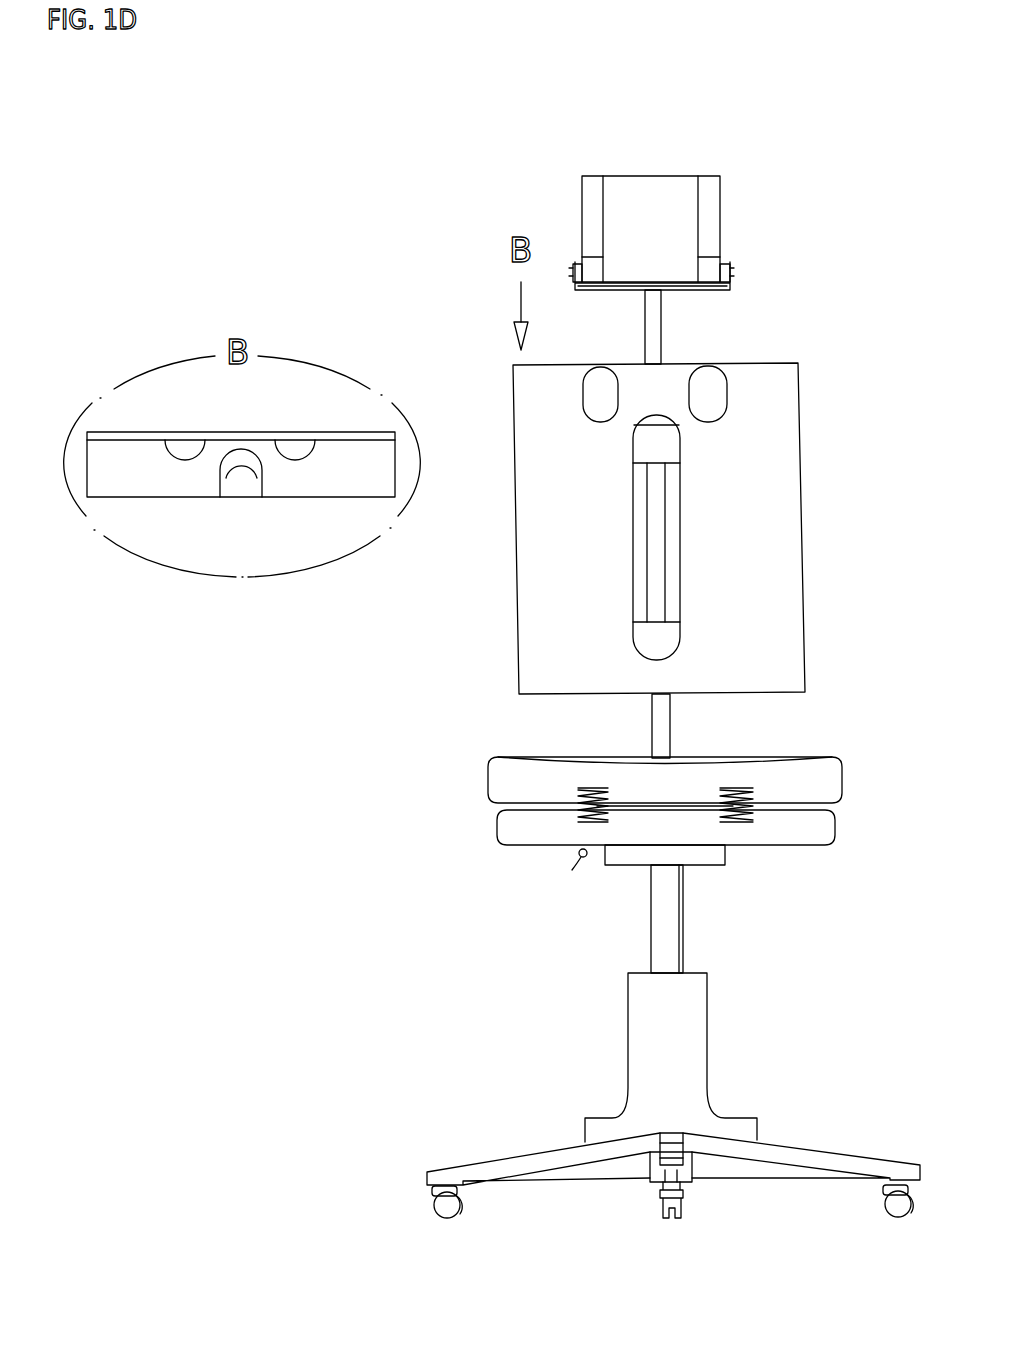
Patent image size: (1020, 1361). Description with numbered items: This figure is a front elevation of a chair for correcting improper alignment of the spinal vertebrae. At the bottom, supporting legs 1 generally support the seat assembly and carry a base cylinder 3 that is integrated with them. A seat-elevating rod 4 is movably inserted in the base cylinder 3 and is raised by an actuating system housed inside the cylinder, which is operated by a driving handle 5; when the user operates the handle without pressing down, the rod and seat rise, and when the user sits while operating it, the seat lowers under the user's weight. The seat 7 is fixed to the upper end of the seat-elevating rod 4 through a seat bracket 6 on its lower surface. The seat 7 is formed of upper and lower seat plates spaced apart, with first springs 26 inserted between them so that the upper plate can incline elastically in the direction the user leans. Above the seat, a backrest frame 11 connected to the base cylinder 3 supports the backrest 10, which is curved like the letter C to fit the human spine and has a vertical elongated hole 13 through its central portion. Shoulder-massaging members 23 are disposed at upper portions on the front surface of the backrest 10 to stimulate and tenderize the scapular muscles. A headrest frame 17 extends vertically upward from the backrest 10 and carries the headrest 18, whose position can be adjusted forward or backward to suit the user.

The supporting legs 1 is at (868, 1168).
The base cylinder 3 is at (638, 1037).
The seat-elevating rod 4 is at (650, 905).
The driving handle 5 is at (572, 870).
The seat bracket 6 is at (690, 868).
The seat 7 is at (484, 766).
The backrest 10 is at (812, 436).
The backrest frame 11 is at (663, 712).
The vertical elongated hole 13 is at (638, 508).
The headrest frame 17 is at (653, 318).
The headrest 18 is at (712, 224).
The shoulder-massaging members 23 is at (592, 395).
The first springs 26 is at (752, 820).